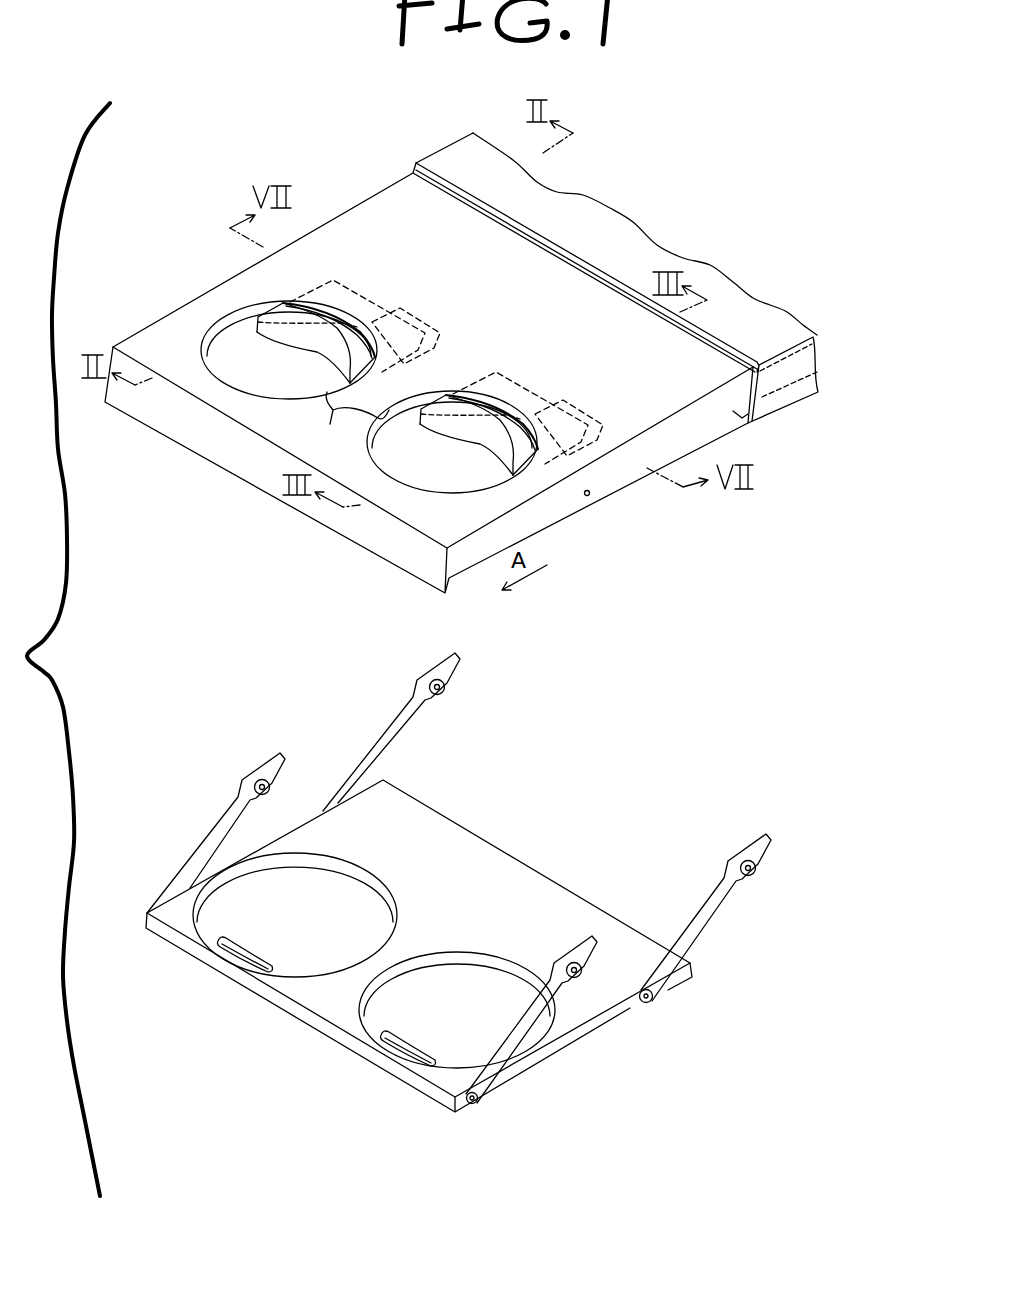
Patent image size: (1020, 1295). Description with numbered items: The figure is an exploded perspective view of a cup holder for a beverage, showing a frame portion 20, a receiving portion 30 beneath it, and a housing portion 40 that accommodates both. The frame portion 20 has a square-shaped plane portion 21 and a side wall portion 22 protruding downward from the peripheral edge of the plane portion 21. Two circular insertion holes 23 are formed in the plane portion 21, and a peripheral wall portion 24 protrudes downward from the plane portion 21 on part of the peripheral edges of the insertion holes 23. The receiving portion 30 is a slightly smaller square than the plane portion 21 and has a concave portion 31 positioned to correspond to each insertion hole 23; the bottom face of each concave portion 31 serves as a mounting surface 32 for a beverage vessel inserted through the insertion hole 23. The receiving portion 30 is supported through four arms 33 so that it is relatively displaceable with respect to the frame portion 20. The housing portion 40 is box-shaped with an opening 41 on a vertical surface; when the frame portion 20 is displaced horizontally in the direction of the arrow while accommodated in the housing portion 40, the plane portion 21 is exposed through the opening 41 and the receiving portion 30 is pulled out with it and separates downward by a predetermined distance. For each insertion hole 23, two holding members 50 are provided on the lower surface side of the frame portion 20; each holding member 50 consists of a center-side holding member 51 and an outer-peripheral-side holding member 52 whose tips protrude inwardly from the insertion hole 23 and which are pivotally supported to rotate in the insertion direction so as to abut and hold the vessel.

The frame portion 20 is at (208, 453).
The plane portion 21 is at (370, 217).
The side wall portion 22 is at (627, 468).
The insertion holes 23 is at (351, 421).
The peripheral wall portion 24 is at (235, 325).
The receiving portion 30 is at (487, 850).
The concave portion 31 is at (428, 977).
The mounting surface 32 is at (363, 897).
The arms 33 is at (380, 746).
The housing portion 40 is at (788, 400).
The opening 41 is at (590, 272).
The holding member 50 is at (495, 353).
The holding member on the center side 51 is at (293, 347).
The holding member on the outer peripheral side 52 is at (357, 337).